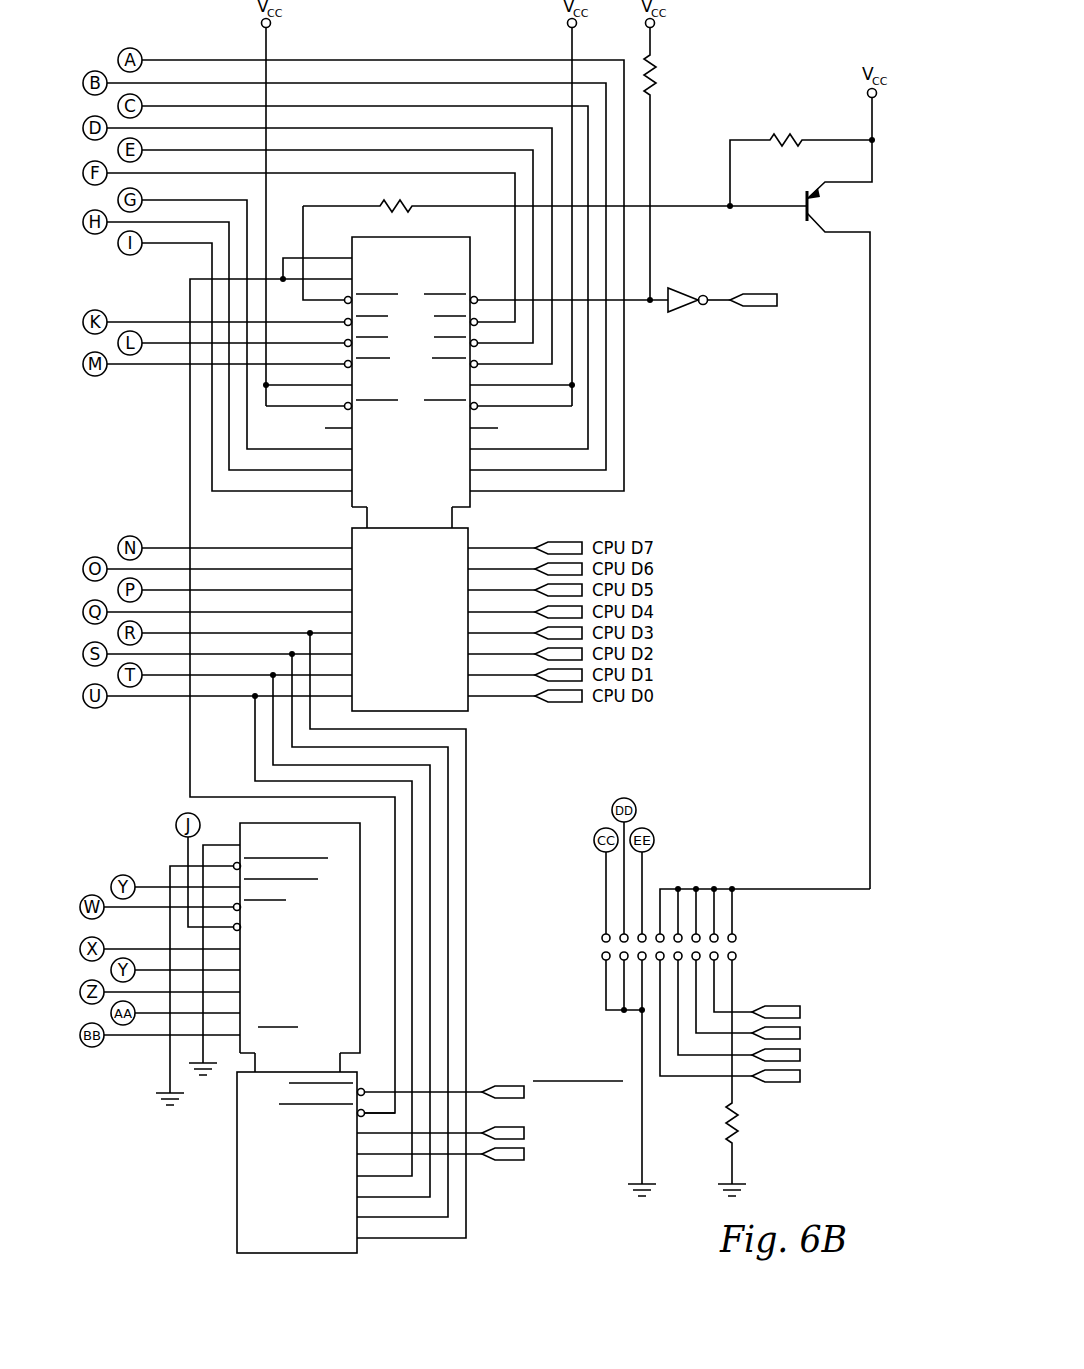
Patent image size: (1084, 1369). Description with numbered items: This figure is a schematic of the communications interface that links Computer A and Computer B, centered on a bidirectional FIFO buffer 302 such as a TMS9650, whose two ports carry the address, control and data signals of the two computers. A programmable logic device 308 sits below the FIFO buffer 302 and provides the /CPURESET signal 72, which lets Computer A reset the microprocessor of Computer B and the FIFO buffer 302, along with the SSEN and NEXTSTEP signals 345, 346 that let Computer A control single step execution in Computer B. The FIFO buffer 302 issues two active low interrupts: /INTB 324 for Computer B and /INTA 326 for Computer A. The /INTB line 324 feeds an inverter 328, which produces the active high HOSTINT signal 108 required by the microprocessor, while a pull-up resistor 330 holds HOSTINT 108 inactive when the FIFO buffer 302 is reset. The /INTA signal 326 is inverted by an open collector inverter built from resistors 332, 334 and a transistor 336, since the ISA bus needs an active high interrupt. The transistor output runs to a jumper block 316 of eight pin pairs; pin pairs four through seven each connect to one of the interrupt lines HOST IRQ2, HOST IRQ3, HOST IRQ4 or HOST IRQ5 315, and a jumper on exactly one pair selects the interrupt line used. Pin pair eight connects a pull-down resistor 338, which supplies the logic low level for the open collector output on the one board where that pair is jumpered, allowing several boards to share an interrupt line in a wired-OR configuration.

The bidirectional FIFO buffer 302 is at (462, 272).
The programmable logic device 308 is at (299, 1232).
The HOST IRQ2, HOST IRQ3, HOST IRQ4, HOST IRQ5 interrupt lines 315 is at (262, 1115).
The jumper block 316 is at (600, 946).
The /INTB interrupt signal 324 is at (492, 258).
The /INTA interrupt signal 326 is at (304, 268).
The inverter 328 is at (686, 288).
The pull-up resistor 330 is at (660, 72).
The resistor 332 is at (388, 205).
The resistor 334 is at (790, 130).
The transistor 336 is at (806, 200).
The pull-down resistor 338 is at (740, 1128).
The SSEN signal connector 345 is at (585, 1136).
The NEXTSTEP signal connector 346 is at (590, 1168).
The /CPURESET signal 72 is at (583, 1075).
The HOSTINT interrupt signal 108 is at (812, 290).